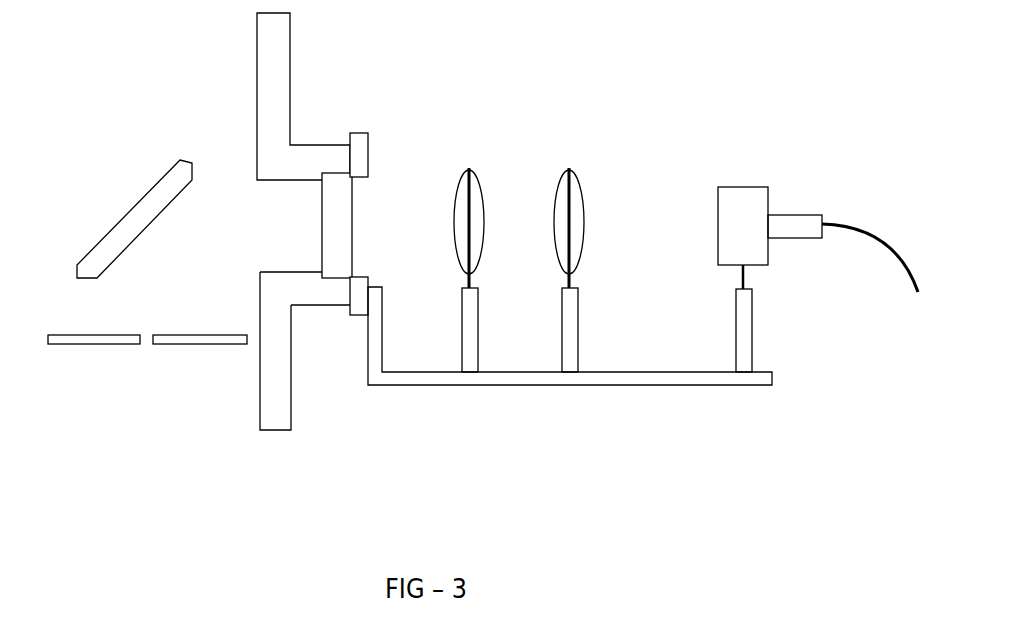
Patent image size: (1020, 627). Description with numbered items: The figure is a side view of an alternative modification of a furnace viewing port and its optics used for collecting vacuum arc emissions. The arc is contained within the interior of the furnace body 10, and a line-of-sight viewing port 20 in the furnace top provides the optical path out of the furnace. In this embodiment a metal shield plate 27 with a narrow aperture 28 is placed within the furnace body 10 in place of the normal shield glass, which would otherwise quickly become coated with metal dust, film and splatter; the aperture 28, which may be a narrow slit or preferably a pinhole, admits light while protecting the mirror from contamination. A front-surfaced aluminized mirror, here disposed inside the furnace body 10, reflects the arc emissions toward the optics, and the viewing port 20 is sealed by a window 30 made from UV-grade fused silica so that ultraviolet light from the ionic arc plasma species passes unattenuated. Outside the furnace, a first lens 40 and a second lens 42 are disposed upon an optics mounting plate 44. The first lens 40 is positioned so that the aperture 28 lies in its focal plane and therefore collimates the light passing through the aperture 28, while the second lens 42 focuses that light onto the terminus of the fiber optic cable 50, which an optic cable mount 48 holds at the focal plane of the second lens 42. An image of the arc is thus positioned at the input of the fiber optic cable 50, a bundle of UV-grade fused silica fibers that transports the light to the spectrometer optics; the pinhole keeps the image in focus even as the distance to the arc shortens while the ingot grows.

The furnace body 10 is at (290, 70).
The viewing port 20 is at (359, 201).
The metal shield plate 27 is at (48, 344).
The aperture 28 is at (148, 344).
The fused silica window 30 is at (339, 217).
The first lens 40 is at (478, 195).
The second lens 42 is at (577, 197).
The optics mounting plate 44 is at (588, 385).
The optic cable mount 48 is at (739, 197).
The fiber optic cable 50 is at (863, 227).